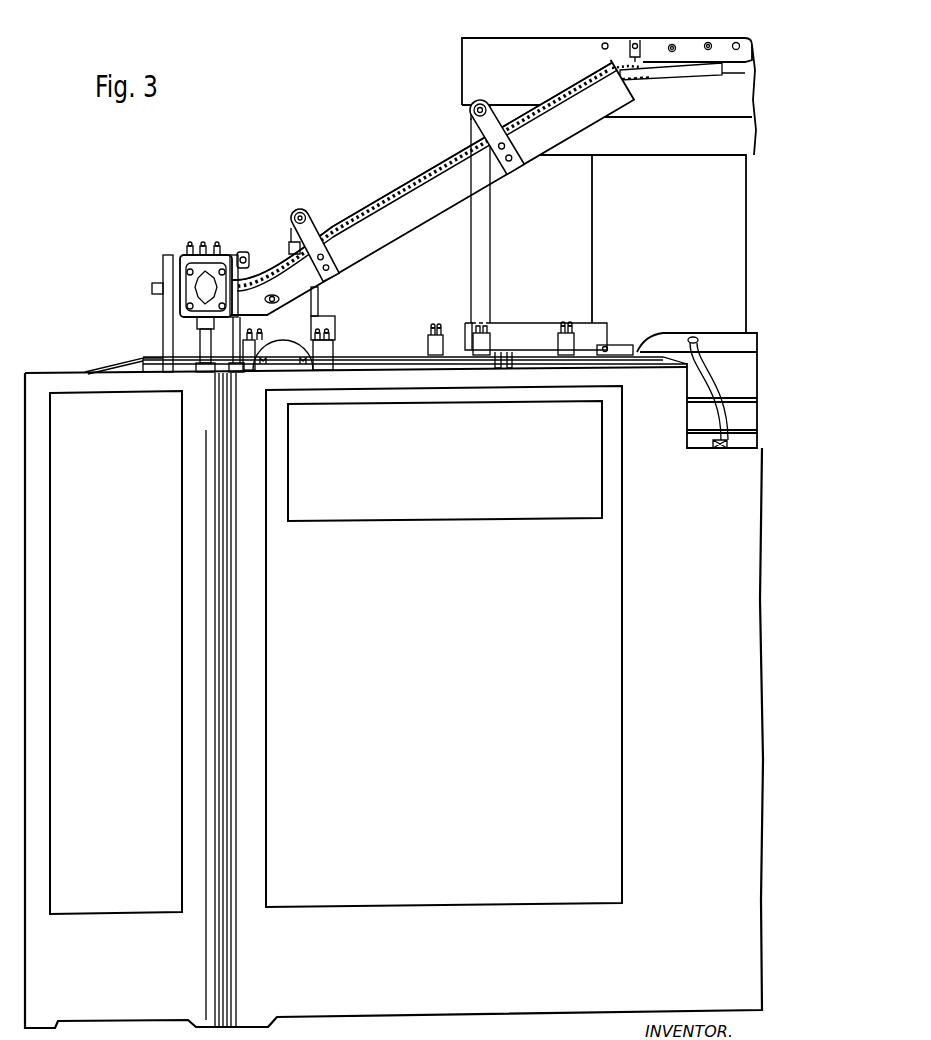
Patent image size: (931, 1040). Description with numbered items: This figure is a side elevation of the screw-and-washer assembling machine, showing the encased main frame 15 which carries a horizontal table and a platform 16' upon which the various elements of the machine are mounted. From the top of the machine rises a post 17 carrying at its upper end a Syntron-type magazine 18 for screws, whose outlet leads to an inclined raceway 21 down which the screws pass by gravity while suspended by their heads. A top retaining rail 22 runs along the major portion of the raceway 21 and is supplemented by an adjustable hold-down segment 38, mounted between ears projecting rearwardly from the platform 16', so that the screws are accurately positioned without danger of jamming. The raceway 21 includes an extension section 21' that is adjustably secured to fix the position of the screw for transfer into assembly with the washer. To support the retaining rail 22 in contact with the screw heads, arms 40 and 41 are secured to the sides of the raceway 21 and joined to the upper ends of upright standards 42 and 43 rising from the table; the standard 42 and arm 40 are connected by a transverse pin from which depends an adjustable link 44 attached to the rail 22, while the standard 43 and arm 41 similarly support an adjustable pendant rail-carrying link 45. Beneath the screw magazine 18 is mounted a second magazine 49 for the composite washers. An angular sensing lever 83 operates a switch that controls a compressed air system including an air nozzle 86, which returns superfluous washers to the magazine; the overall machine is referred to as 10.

The conveyor belt 10 is at (371, 206).
The main frame 15 is at (703, 640).
The platform 16' is at (188, 296).
The post 17 is at (681, 280).
The magazine 18 is at (529, 67).
The raceway 21 is at (432, 187).
The extension section 21' is at (313, 300).
The top retaining rail 22 is at (431, 169).
The hold-down segment 38 is at (265, 270).
The arm 40 is at (512, 142).
The arm 41 is at (322, 249).
The upright standard 42 is at (471, 289).
The upright standard 43 is at (313, 323).
The adjustable link 44 is at (476, 131).
The pendant rail-carrying link 45 is at (291, 235).
The second magazine 49 is at (519, 323).
The angular sensing lever 83 is at (508, 368).
The air nozzle 86 is at (712, 358).